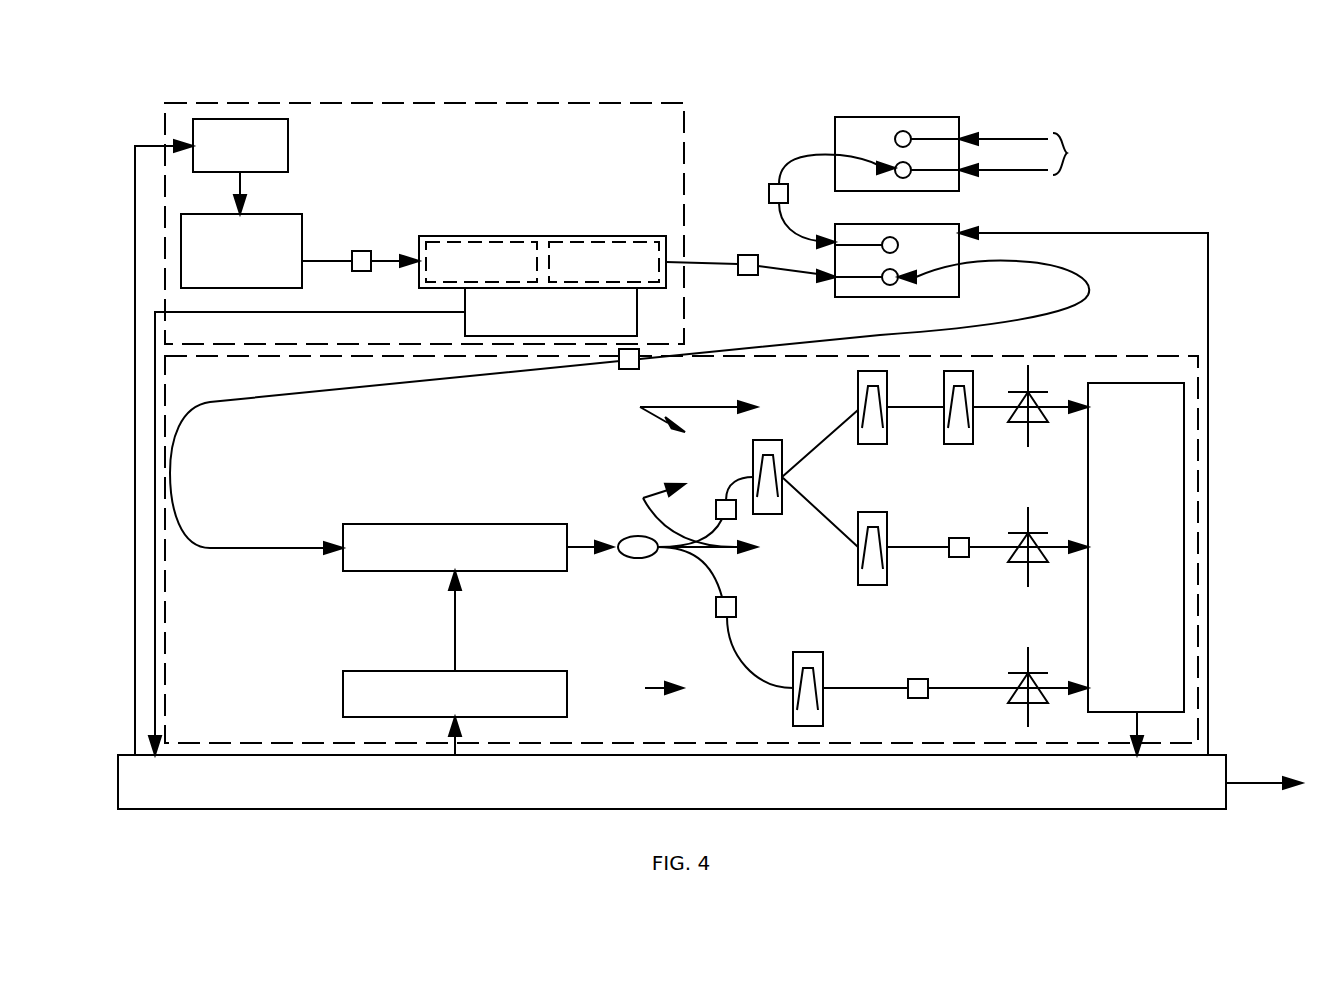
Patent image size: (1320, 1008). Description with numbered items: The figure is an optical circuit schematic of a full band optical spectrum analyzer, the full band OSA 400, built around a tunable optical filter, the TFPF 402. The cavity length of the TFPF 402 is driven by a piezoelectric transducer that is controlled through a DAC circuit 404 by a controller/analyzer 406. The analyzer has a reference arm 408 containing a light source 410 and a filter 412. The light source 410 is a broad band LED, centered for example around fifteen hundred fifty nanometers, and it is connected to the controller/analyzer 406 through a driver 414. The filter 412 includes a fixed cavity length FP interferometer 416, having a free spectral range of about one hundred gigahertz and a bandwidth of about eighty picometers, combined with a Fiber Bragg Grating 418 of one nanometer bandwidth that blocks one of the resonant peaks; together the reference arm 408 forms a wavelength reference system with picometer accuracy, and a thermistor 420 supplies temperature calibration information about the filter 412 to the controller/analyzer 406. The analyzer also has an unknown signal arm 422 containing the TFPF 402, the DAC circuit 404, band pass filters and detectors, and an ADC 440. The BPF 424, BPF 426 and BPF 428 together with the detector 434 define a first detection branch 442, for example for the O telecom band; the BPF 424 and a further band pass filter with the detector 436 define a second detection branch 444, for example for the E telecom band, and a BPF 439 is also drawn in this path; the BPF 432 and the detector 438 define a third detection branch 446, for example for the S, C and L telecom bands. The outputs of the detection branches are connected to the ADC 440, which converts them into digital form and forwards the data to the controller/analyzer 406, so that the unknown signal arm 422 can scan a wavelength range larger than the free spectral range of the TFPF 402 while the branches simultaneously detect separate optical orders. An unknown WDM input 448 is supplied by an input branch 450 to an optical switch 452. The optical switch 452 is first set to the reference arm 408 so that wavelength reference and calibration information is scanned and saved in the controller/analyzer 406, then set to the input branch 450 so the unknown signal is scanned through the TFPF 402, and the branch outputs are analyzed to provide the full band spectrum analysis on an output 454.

The full band OSA 400 is at (72, 98).
The TFPF 402 is at (455, 547).
The DAC circuit 404 is at (455, 694).
The controller/analyzer 406 is at (672, 782).
The reference arm 408 is at (165, 205).
The light source 410 is at (241, 251).
The filter 412 is at (542, 238).
The driver 414 is at (240, 145).
The fixed cavity length FP interferometer 416 is at (481, 262).
The Fiber Bragg Grating 418 is at (539, 236).
The thermistor 420 is at (551, 312).
The unknown signal arm 422 is at (165, 399).
The BPF 424 is at (782, 497).
The BPF 426 is at (858, 400).
The BPF 428 is at (944, 396).
The BPF 432 is at (823, 672).
The detector 434 is at (1022, 426).
The detector 436 is at (1022, 566).
The detector 438 is at (1018, 704).
The optical filter 439 is at (887, 527).
The ADC 440 is at (1136, 547).
The first detection branch 442 is at (677, 413).
The second detection branch 444 is at (666, 515).
The third detection branch 446 is at (640, 689).
The WDM input 448 is at (1072, 153).
The input branch 450 is at (900, 117).
The optical switch 452 is at (865, 298).
The output 454 is at (1240, 782).